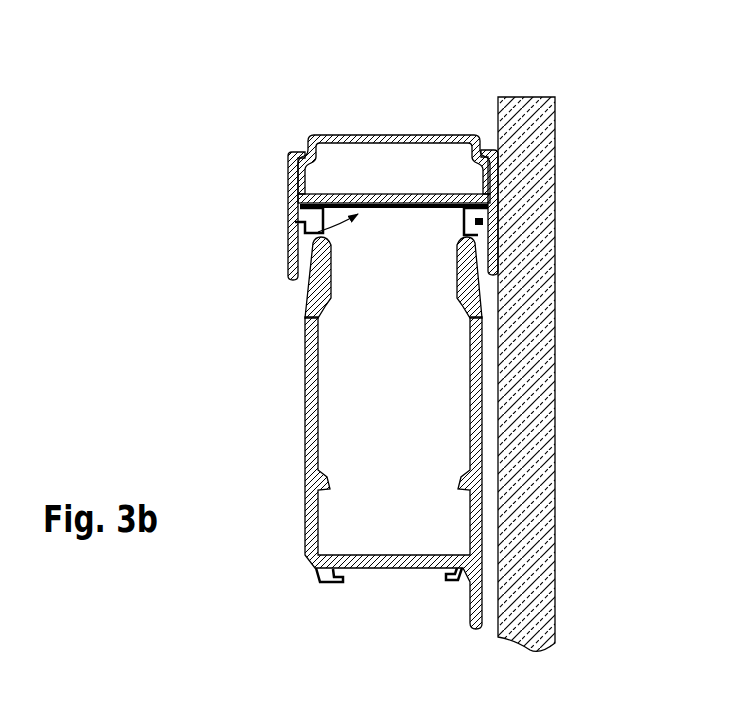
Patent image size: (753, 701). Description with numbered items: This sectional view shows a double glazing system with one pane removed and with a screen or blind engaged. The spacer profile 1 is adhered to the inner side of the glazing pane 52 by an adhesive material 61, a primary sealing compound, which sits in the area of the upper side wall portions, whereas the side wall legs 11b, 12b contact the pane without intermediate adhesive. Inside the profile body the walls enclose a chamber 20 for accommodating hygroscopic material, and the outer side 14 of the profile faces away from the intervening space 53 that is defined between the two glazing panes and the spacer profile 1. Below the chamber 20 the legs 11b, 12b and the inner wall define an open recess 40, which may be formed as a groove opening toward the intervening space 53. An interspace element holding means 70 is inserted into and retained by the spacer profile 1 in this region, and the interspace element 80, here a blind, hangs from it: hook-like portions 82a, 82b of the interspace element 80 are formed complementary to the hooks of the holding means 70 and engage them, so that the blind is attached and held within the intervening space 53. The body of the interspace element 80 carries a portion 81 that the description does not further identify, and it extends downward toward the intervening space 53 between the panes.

The spacer profile 1 is at (257, 243).
The outer side 14 is at (392, 129).
The chamber 20 is at (403, 182).
The recess 40 is at (413, 223).
The glazing pane 52 is at (527, 222).
The intervening space 53 is at (413, 658).
The adhesive material 61 is at (426, 217).
The interspace element holding means 70 is at (305, 220).
The interspace element 80 is at (302, 513).
The cavity 81 is at (413, 434).
The hook-like portion 82a is at (317, 244).
The hook-like portion 82b is at (464, 241).
The side wall leg 11b is at (290, 270).
The side wall leg 12b is at (496, 270).